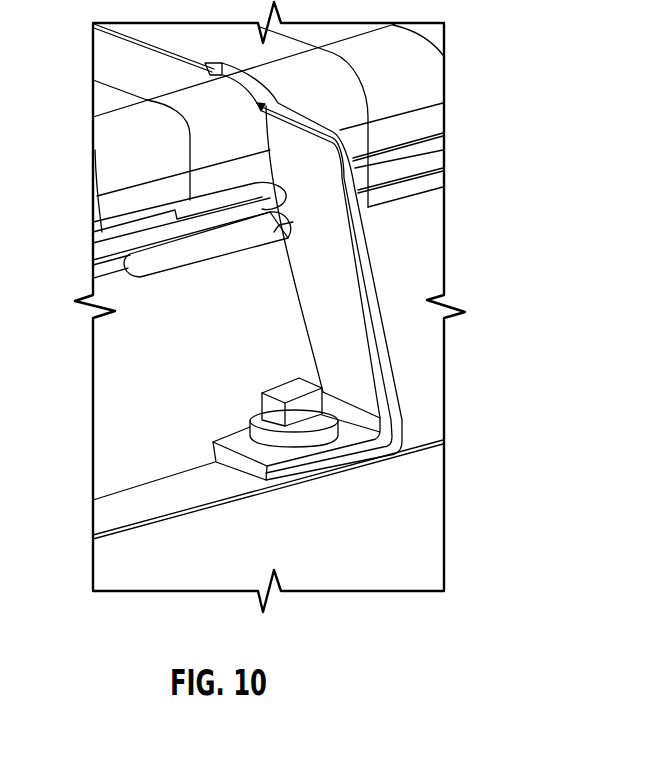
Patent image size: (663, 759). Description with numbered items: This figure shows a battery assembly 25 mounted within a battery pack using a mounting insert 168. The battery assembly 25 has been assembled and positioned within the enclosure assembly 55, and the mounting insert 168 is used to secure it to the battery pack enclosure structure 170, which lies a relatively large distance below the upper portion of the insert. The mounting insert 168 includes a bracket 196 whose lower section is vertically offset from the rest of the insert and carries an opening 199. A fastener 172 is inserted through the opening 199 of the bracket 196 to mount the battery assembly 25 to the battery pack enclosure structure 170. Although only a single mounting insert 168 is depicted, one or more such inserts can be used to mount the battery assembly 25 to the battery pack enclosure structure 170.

The battery assembly 25 is at (468, 33).
The enclosure assembly 55 is at (130, 623).
The mounting insert 168 is at (356, 316).
The battery pack enclosure structure 170 is at (413, 530).
The fastener 172 is at (270, 407).
The bracket 196 is at (348, 361).
The opening 199 is at (303, 450).